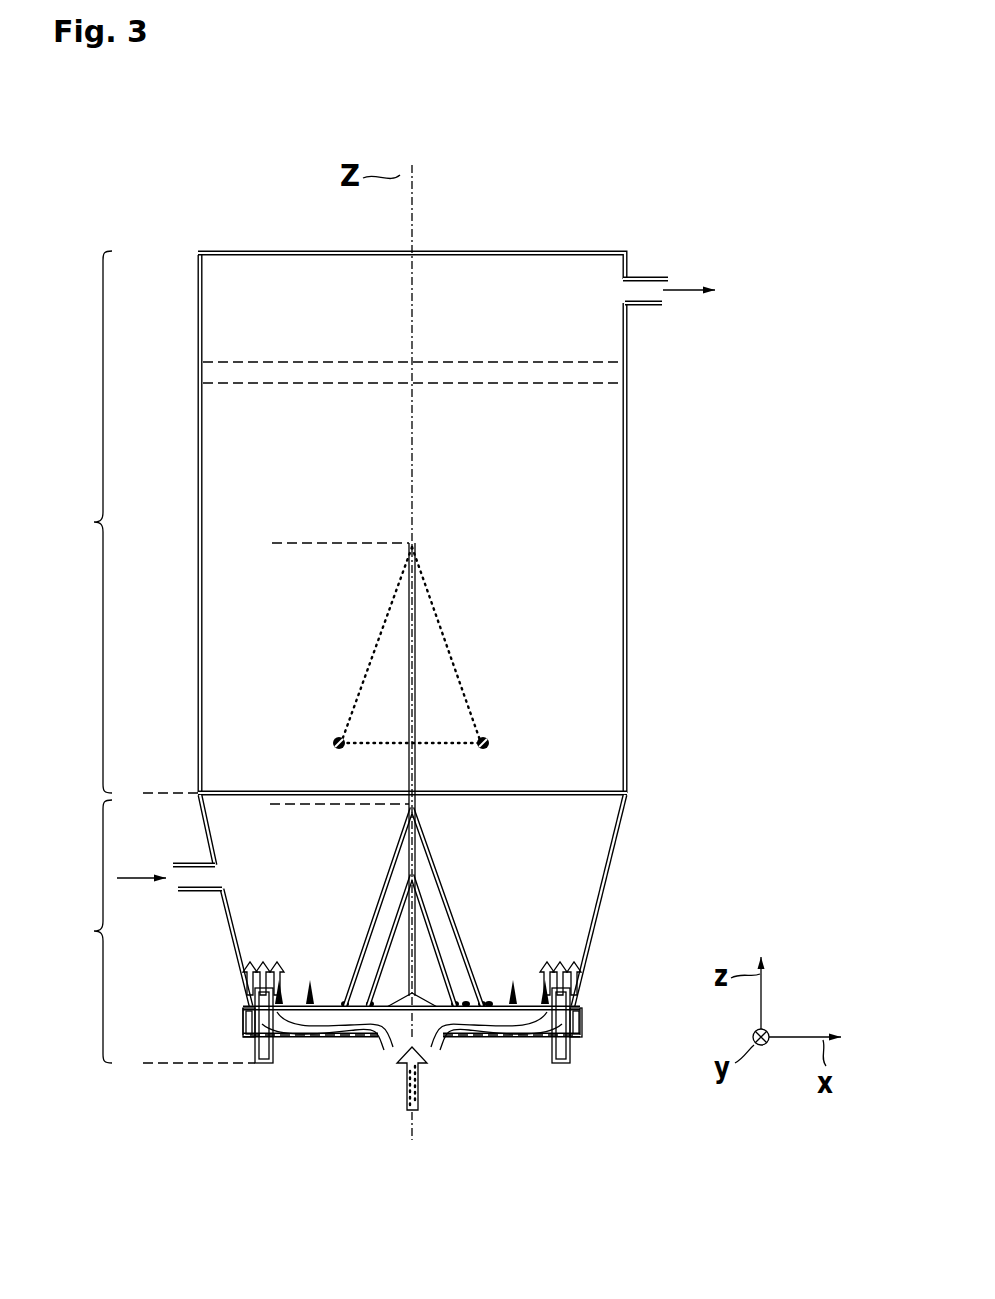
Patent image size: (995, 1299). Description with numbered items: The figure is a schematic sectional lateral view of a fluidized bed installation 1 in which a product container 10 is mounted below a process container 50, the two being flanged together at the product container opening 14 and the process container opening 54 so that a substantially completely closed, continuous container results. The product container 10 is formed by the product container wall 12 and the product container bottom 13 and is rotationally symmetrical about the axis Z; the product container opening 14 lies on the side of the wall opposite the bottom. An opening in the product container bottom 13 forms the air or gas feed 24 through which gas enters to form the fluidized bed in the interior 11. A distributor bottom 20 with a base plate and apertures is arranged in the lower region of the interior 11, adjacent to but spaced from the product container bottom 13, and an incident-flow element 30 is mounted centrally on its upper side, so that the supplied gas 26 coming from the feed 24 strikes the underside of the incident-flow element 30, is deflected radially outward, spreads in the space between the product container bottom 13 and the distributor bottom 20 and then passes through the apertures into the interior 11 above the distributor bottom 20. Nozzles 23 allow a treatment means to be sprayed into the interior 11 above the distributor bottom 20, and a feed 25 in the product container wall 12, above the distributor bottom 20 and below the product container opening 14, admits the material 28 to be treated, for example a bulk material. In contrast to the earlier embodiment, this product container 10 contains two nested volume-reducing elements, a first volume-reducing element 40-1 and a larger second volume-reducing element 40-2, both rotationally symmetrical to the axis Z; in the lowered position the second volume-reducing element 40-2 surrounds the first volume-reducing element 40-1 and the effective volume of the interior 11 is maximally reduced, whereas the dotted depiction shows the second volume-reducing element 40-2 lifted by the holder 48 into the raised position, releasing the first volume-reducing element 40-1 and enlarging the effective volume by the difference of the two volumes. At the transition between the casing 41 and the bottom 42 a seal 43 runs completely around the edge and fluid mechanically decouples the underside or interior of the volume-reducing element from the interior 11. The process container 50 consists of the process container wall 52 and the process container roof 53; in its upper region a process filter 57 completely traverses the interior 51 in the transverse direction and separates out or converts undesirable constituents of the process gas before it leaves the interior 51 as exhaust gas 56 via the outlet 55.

The fluidized bed installation 1 is at (168, 184).
The product container 10 is at (372, 655).
The interior of the product container 11 is at (585, 843).
The product container wall 12 is at (603, 912).
The product container bottom 13 is at (495, 1050).
The product container opening 14 is at (238, 790).
The distributor bottom 20 is at (538, 1040).
The nozzle 23 is at (566, 1053).
The air or gas feed 24 is at (419, 1075).
The feed 25 is at (200, 891).
The supplied gas 26 is at (346, 1034).
The material to be treated 28 is at (142, 881).
The incident-flow element 30 is at (394, 985).
The first volume-reducing element 40-1 is at (438, 915).
The second volume-reducing element 40-2 is at (448, 603).
The casing 41 is at (462, 674).
The bottom 42 is at (466, 736).
The seal 43 is at (333, 738).
The holder 48 is at (418, 545).
The process container 50 is at (381, 483).
The interior of the process container 51 is at (598, 435).
The process container wall 52 is at (626, 538).
The process container roof 53 is at (517, 249).
The process container opening 54 is at (228, 797).
The outlet 55 is at (652, 276).
The exhaust gas 56 is at (692, 295).
The process filter 57 is at (251, 360).